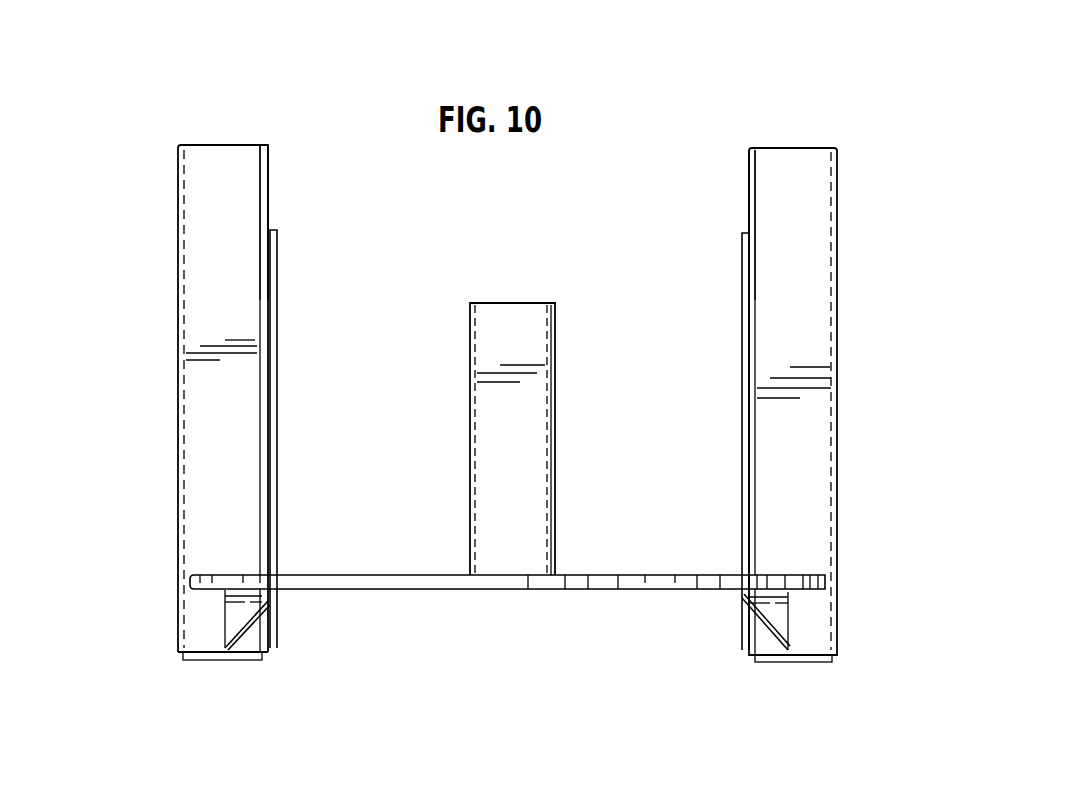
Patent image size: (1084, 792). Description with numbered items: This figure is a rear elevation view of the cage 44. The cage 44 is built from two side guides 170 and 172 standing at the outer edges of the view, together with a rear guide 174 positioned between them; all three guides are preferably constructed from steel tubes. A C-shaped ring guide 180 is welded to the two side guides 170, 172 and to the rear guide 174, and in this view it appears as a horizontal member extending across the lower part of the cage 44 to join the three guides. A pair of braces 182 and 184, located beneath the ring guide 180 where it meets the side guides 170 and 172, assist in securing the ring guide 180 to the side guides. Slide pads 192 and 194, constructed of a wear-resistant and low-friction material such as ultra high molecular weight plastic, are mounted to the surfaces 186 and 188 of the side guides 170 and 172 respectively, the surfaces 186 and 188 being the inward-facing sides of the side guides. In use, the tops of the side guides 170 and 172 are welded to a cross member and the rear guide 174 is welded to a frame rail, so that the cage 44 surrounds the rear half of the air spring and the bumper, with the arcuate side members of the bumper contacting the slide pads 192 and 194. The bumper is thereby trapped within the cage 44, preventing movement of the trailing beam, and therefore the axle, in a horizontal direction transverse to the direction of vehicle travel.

The cage 44 is at (915, 228).
The side guide 170 is at (178, 438).
The side guide 172 is at (837, 425).
The rear guide 174 is at (513, 305).
The C-shaped ring guide 180 is at (632, 592).
The brace 182 is at (250, 630).
The brace 184 is at (752, 655).
The surface 186 is at (268, 172).
The surface 188 is at (749, 195).
The slide pad 192 is at (277, 418).
The slide pad 194 is at (742, 387).